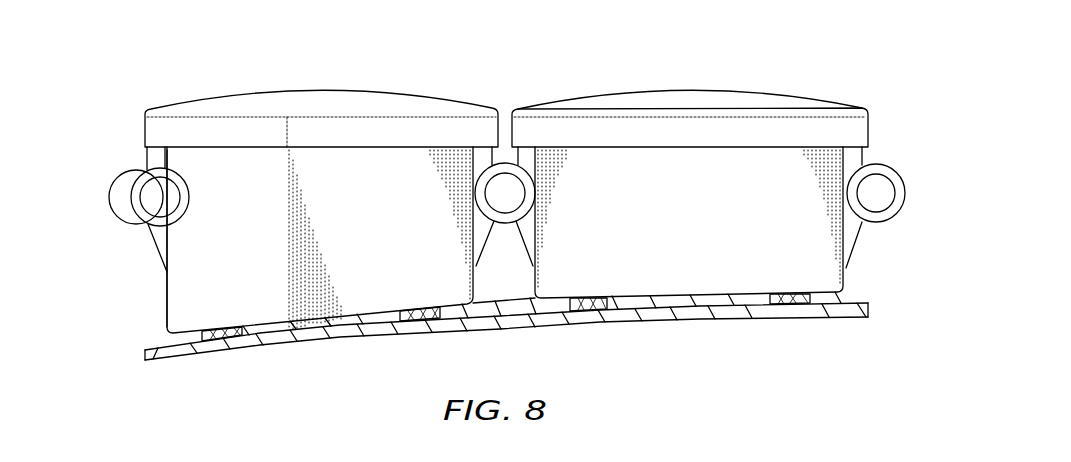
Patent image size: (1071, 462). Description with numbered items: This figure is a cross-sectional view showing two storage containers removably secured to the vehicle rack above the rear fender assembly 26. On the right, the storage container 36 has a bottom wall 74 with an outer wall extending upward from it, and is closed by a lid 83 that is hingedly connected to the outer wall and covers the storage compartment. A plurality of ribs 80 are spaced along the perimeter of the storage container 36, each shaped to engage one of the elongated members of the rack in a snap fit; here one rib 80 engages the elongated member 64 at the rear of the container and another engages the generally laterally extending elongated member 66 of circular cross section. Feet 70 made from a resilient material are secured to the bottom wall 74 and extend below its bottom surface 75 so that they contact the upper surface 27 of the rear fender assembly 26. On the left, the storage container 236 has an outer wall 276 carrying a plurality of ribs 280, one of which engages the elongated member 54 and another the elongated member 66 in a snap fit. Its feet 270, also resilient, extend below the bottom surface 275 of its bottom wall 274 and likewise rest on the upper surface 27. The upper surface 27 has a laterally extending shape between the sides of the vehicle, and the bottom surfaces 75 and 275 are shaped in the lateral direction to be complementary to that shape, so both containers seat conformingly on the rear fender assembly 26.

The rear fender assembly 26 is at (623, 328).
The upper surface 27 is at (724, 293).
The storage container 36 is at (789, 91).
The elongated member 54 is at (123, 170).
The elongated member 64 is at (888, 163).
The elongated member 66 is at (534, 165).
The feet 70 is at (588, 318).
The bottom wall 74 is at (657, 304).
The bottom surface 75 is at (693, 306).
The ribs 80 is at (526, 256).
The lid 83 is at (694, 92).
The storage container 236 is at (222, 94).
The feet 270 is at (218, 345).
The bottom wall 274 is at (344, 324).
The bottom surface 275 is at (275, 331).
The outer wall 276 is at (164, 300).
The ribs 280 is at (154, 252).